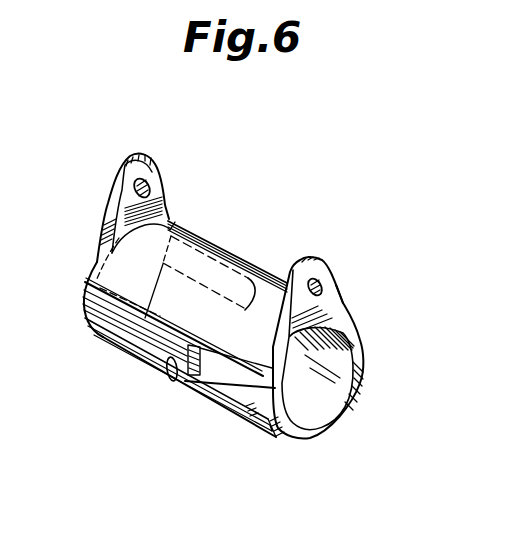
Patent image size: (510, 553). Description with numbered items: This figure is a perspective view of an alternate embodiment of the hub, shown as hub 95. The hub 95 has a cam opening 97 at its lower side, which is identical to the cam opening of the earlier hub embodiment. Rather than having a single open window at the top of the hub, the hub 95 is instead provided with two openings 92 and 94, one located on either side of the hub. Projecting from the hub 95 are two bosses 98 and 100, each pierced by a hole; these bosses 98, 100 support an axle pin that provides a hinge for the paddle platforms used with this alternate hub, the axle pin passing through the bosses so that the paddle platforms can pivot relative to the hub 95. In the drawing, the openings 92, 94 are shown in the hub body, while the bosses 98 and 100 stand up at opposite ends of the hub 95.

The opening 92 is at (262, 425).
The opening 94 is at (203, 262).
The hub 95 is at (333, 303).
The cam opening 97 is at (176, 374).
The boss 98 is at (115, 203).
The boss 100 is at (336, 300).